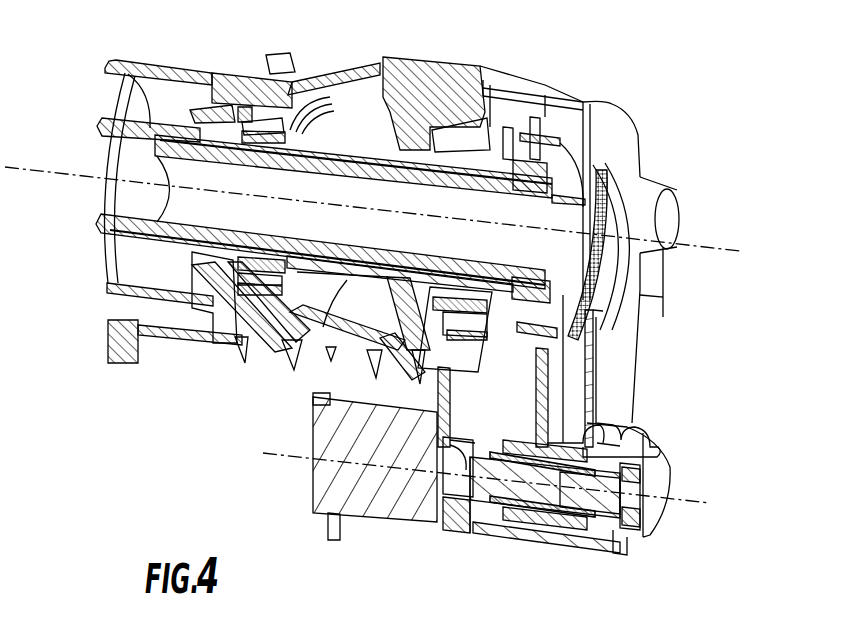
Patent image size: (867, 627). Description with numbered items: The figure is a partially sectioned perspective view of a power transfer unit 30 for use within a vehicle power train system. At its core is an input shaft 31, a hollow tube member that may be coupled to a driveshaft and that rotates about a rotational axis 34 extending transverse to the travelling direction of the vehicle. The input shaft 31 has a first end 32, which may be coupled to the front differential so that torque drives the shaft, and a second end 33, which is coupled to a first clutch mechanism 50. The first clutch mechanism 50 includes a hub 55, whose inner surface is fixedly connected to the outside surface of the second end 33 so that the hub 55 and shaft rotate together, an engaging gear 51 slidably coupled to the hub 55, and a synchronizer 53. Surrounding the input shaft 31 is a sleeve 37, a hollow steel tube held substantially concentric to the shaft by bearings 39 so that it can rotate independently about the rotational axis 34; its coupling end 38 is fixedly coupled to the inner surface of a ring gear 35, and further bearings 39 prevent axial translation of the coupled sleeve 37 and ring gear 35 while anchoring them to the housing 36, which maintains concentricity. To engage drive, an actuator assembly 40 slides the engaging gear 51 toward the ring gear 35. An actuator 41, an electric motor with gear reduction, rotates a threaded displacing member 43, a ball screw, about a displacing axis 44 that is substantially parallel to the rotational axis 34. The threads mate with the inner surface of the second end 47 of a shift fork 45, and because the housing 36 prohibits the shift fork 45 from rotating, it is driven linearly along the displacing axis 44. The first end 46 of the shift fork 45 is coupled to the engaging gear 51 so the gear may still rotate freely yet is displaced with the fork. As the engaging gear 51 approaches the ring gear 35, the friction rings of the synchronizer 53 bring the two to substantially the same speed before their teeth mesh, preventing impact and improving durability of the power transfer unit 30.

The power transfer unit 30 is at (85, 423).
The input shaft 31 is at (272, 238).
The first end 32 is at (180, 152).
The second end 33 is at (538, 274).
The rotational axis 34 is at (705, 250).
The ring gear 35 is at (400, 330).
The housing 36 is at (276, 335).
The sleeve 37 is at (316, 128).
The coupling end 38 is at (410, 147).
The bearings 39 is at (253, 127).
The actuator assembly 40 is at (478, 503).
The actuator 41 is at (323, 475).
The displacing member 43 is at (605, 500).
The displacing axis 44 is at (688, 503).
The shift fork 45 is at (538, 422).
The first end 46 is at (580, 365).
The second end 47 is at (517, 500).
The first clutch mechanism 50 is at (565, 170).
The engaging gear 51 is at (560, 100).
The synchronizer 53 is at (552, 130).
The hub 55 is at (597, 298).